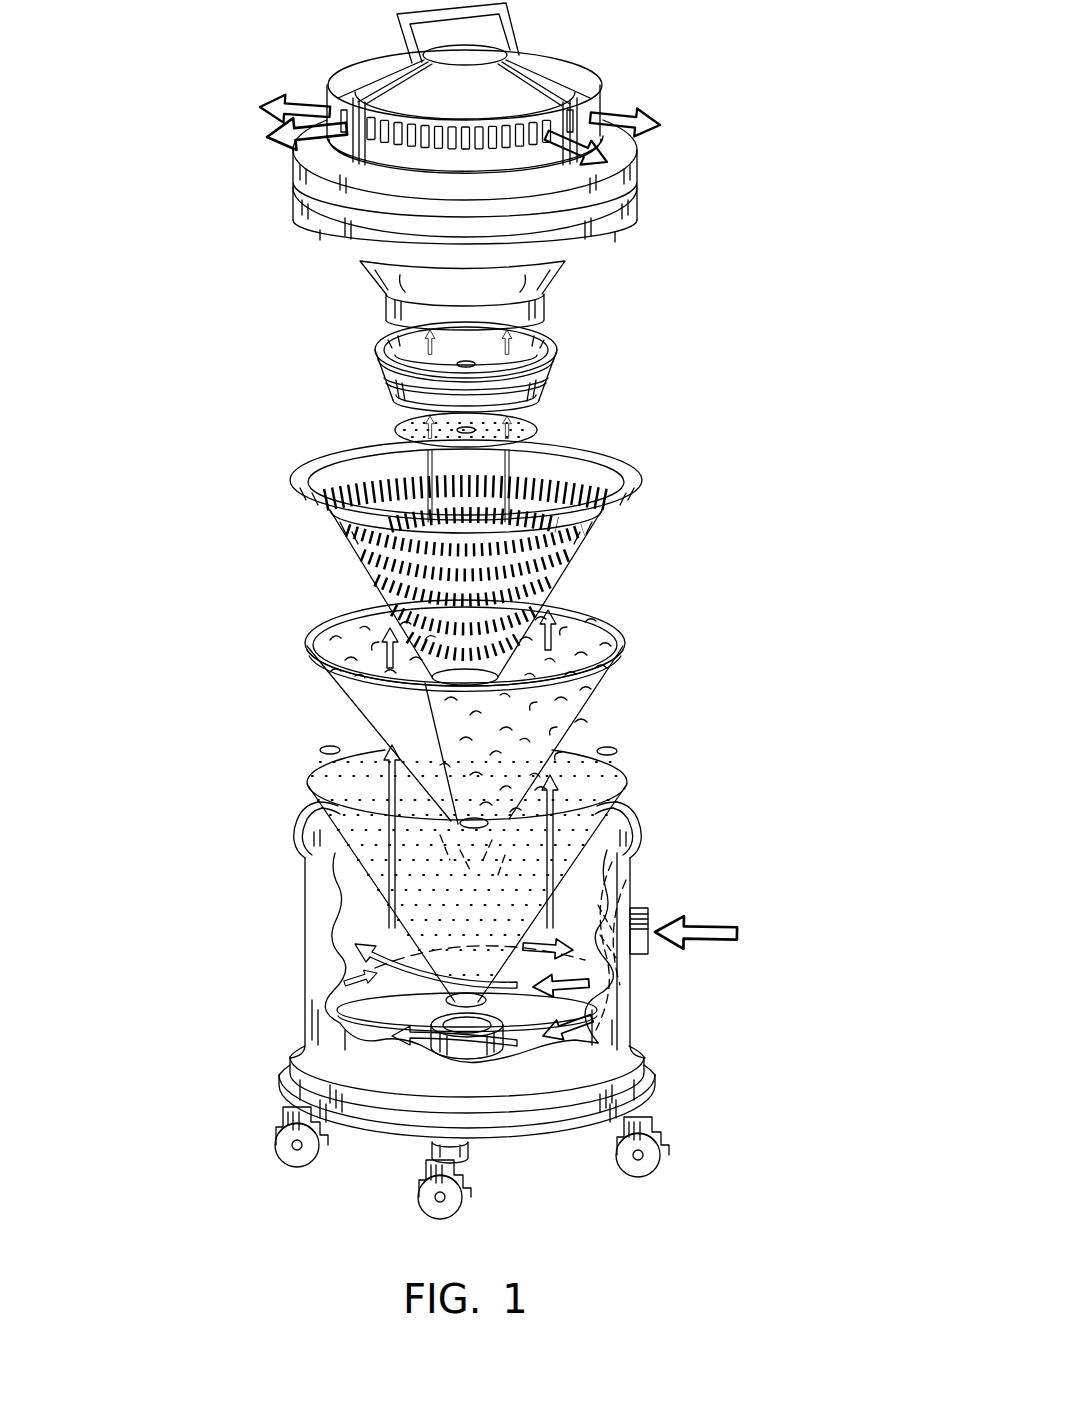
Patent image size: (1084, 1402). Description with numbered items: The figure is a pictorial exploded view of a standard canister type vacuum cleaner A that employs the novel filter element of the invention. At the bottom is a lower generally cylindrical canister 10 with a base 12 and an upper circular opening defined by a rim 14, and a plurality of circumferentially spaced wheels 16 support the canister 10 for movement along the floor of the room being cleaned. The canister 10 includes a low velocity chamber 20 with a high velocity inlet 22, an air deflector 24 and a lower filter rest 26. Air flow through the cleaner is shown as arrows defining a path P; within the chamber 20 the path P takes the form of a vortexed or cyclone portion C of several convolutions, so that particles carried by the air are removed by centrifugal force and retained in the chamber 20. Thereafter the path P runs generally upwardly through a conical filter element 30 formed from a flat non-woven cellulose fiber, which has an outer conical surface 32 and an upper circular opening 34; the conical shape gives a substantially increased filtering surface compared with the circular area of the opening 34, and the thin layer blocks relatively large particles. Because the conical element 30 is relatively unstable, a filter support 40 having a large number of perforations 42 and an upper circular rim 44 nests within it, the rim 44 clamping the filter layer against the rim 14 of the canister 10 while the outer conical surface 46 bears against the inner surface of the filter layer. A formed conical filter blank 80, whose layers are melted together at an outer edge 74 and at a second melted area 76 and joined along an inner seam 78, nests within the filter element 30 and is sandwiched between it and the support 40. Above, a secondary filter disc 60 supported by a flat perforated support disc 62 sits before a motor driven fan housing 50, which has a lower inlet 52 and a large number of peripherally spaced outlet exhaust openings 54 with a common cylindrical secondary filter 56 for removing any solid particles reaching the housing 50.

The canister 10 is at (472, 1017).
The base 12 is at (650, 1078).
The rim 14 is at (640, 828).
The wheels 16 is at (283, 1162).
The low velocity chamber 20 is at (617, 827).
The high velocity inlet 22 is at (645, 912).
The air deflector 24 is at (635, 983).
The lower filter rest 26 is at (472, 1052).
The conical filter element 30 is at (330, 824).
The outer conical surface 32 is at (373, 860).
The upper circular opening 34 is at (474, 872).
The filter support 40 is at (480, 553).
The perforations 42 is at (548, 570).
The upper circular rim 44 is at (620, 470).
The outer conical surface 46 is at (370, 578).
The motor driven fan housing 50 is at (493, 166).
The lower inlet 52 is at (469, 367).
The outlet exhaust openings 54 is at (507, 130).
The cylindrical secondary filter 56 is at (375, 150).
The secondary filter disc 60 is at (393, 427).
The flat perforated support disc 62 is at (395, 397).
The outer edge 74 is at (607, 670).
The second melted area 76 is at (577, 683).
The inner seam 78 is at (423, 708).
The filter blank 80 is at (477, 737).
The canister type vacuum cleaner A is at (732, 289).
The air flow path P is at (292, 100).
The cyclone portion C is at (340, 980).